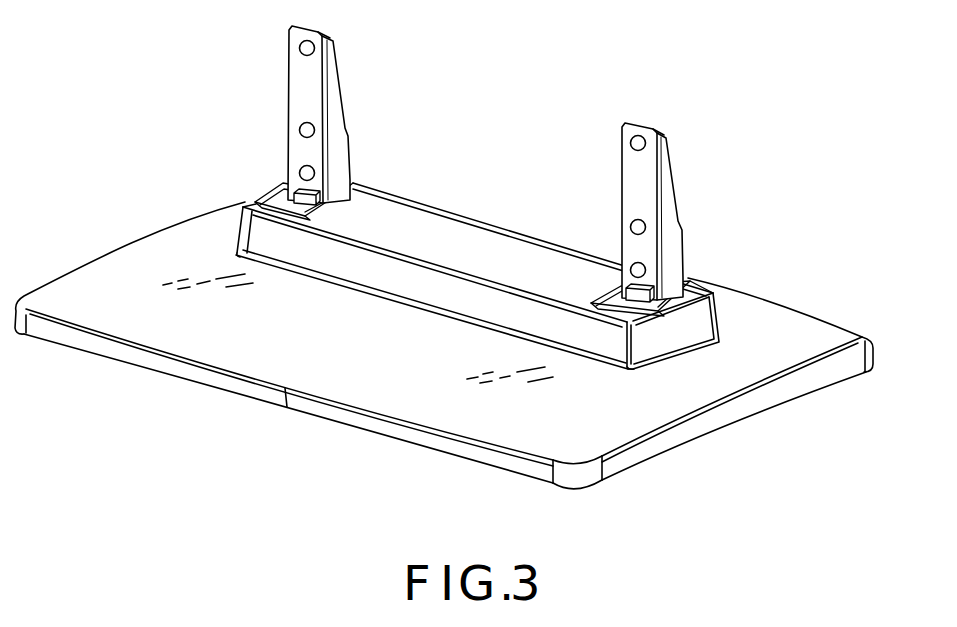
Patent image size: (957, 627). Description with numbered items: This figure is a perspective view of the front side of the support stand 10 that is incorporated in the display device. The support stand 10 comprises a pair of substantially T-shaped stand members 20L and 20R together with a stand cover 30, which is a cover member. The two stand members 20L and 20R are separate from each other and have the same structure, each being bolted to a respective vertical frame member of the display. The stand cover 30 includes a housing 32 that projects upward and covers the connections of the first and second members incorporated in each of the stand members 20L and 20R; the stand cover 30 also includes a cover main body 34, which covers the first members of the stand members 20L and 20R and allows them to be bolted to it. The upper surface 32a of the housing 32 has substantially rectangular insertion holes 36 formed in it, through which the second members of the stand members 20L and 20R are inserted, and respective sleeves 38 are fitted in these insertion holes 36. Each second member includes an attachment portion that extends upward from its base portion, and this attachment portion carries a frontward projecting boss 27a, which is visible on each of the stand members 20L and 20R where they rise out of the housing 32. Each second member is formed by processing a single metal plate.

The support stand 10 is at (451, 257).
The stand member 20L is at (372, 81).
The stand member 20R is at (708, 178).
The boss 27a is at (305, 195).
The stand cover 30 is at (444, 345).
The housing 32 is at (526, 255).
The upper surface 32a is at (497, 240).
The cover main body 34 is at (138, 245).
The insertion hole 36 is at (360, 192).
The sleeve 38 is at (272, 200).